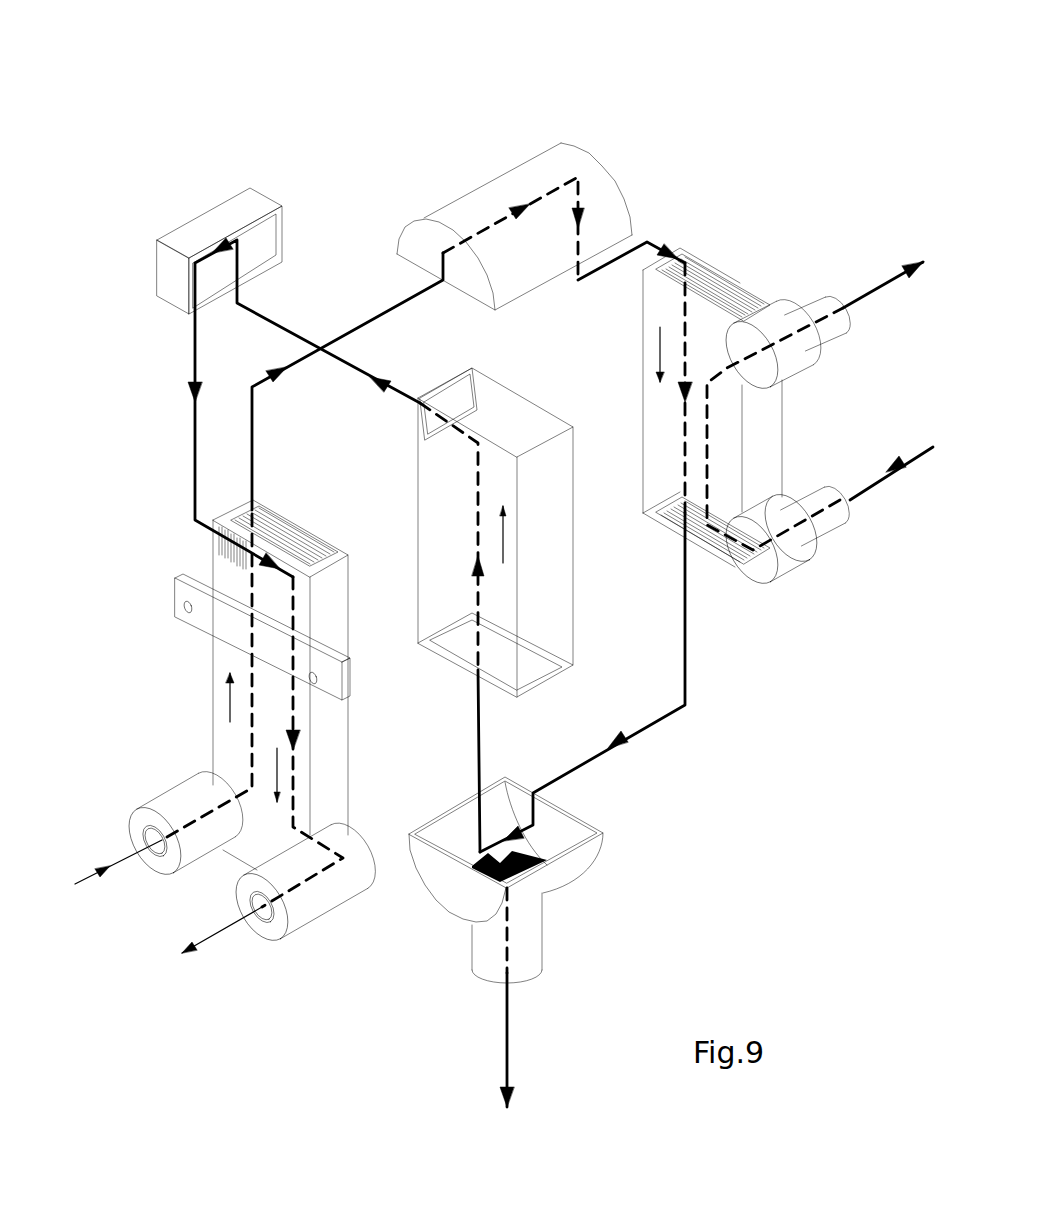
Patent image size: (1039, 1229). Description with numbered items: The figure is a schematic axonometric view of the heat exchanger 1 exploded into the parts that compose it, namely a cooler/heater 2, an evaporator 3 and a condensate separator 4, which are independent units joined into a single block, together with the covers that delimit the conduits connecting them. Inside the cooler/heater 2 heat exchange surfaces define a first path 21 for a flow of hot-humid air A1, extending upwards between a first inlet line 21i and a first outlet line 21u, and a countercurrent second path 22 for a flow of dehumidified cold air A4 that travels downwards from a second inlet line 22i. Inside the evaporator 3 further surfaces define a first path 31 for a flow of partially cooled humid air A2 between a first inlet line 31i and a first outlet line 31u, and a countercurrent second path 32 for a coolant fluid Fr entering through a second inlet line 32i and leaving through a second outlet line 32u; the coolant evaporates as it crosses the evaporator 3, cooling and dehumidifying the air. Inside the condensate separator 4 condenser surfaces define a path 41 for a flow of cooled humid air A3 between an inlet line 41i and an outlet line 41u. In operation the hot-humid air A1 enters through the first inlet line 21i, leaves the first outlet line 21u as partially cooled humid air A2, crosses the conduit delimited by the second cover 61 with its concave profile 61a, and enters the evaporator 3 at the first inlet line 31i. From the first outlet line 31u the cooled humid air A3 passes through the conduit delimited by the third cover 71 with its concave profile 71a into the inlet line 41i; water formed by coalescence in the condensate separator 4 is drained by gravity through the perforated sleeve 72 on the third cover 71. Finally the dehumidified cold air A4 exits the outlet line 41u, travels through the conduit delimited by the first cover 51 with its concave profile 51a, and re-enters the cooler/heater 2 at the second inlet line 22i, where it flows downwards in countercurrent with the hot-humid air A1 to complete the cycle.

The heat exchanger 1 is at (118, 102).
The cooler/heater 2 is at (338, 578).
The first path 21 is at (252, 740).
The first inlet line 21i is at (162, 857).
The first outlet line 21u is at (283, 530).
The second path 22 is at (297, 715).
The second inlet line 22i is at (222, 543).
The evaporator 3 is at (655, 478).
The first path 31 is at (688, 607).
The first inlet line 31i is at (716, 283).
The first outlet line 31u is at (677, 517).
The second path 32 is at (708, 423).
The second inlet line 32i is at (850, 507).
The second outlet line 32u is at (838, 326).
The condensate separator 4 is at (558, 457).
The path 41 is at (478, 484).
The inlet line 41i is at (530, 672).
The outlet line 41u is at (458, 398).
The first cover 51 is at (250, 203).
The concave profile 51a is at (260, 236).
The second cover 61 is at (558, 158).
The concave profile 61a is at (436, 238).
The third cover 71 is at (585, 857).
The concave profile 71a is at (567, 841).
The perforated sleeve 72 is at (532, 932).
The flow of hot-humid air A1 is at (230, 704).
The flow of partially cooled humid air A2 is at (660, 348).
The flow of cooled humid air A3 is at (503, 535).
The flow of dehumidified cold air A4 is at (280, 771).
The coolant fluid Fr is at (895, 461).